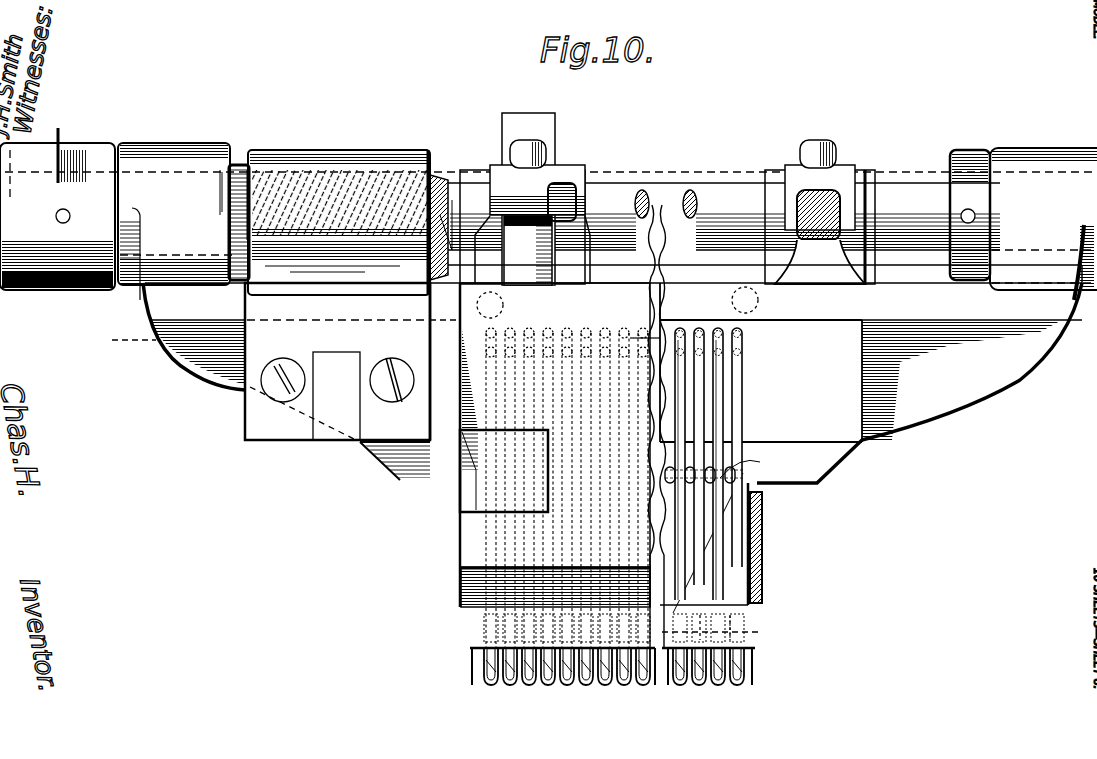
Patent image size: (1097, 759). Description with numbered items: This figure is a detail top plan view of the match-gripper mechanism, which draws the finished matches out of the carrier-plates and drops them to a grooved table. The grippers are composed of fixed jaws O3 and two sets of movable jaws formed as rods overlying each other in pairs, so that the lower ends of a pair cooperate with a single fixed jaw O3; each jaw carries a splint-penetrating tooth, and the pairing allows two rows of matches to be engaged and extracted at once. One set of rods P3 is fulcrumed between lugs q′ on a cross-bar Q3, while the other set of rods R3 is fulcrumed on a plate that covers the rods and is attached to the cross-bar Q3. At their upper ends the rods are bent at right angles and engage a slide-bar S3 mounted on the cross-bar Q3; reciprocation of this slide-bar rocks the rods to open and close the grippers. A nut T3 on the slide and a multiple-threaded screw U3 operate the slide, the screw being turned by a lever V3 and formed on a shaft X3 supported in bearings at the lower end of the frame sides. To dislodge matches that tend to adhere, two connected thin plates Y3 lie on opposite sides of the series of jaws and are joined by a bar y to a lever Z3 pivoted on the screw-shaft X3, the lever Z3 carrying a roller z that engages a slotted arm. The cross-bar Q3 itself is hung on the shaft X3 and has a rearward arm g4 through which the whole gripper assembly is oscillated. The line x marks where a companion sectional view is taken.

The lever V3 is at (60, 140).
The nut T3 is at (352, 162).
The multiple-threaded screw U3 is at (440, 178).
The shaft X3 is at (706, 194).
The lever Z3 is at (667, 199).
The cross-bar Q3 is at (337, 381).
The section line x is at (381, 340).
The bar y is at (470, 330).
The needle bed g4 is at (555, 465).
The slide-bar S3 is at (861, 362).
The rods R3 is at (720, 425).
The lugs q′ is at (662, 475).
The thin plates Y3 is at (462, 540).
The roller z is at (710, 632).
The fixed jaws O3 is at (500, 690).
The rods P3 is at (492, 660).